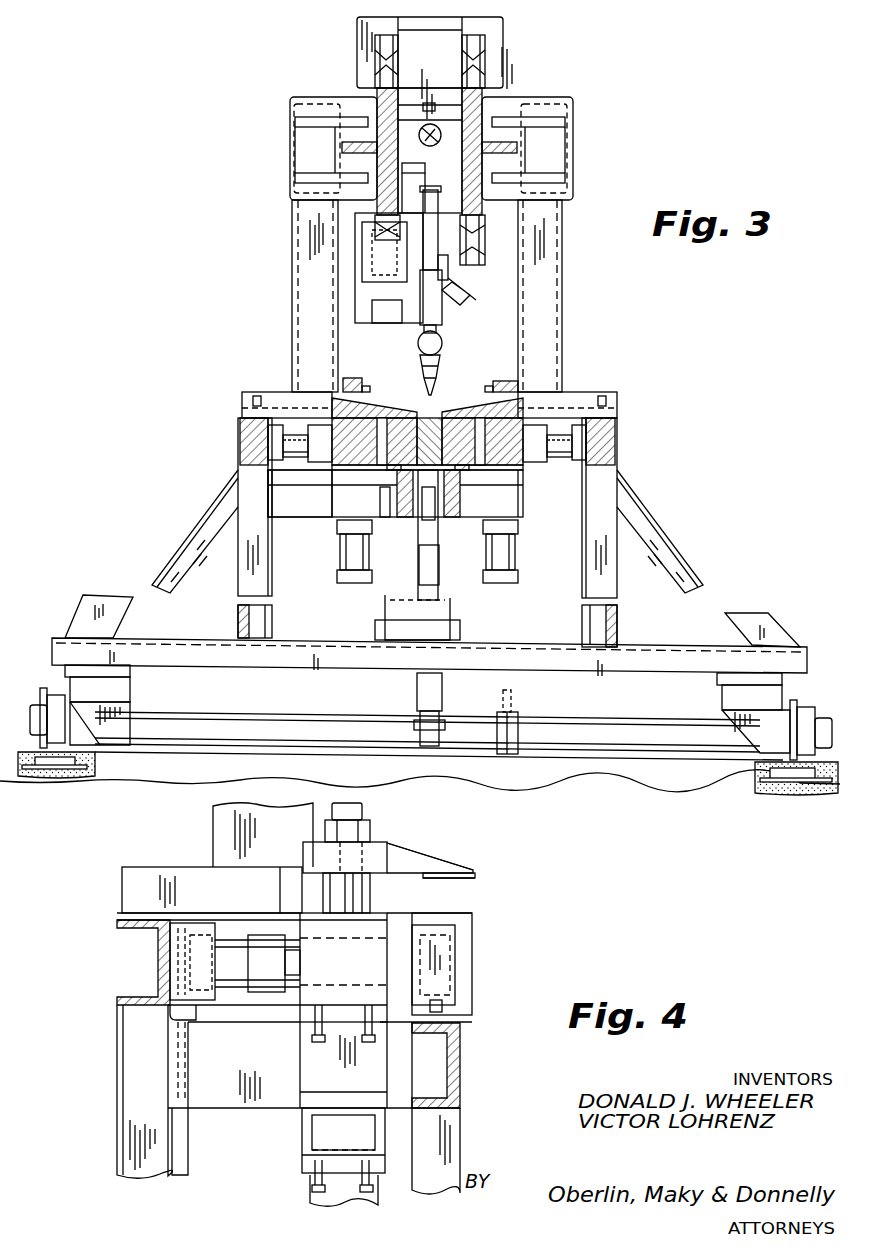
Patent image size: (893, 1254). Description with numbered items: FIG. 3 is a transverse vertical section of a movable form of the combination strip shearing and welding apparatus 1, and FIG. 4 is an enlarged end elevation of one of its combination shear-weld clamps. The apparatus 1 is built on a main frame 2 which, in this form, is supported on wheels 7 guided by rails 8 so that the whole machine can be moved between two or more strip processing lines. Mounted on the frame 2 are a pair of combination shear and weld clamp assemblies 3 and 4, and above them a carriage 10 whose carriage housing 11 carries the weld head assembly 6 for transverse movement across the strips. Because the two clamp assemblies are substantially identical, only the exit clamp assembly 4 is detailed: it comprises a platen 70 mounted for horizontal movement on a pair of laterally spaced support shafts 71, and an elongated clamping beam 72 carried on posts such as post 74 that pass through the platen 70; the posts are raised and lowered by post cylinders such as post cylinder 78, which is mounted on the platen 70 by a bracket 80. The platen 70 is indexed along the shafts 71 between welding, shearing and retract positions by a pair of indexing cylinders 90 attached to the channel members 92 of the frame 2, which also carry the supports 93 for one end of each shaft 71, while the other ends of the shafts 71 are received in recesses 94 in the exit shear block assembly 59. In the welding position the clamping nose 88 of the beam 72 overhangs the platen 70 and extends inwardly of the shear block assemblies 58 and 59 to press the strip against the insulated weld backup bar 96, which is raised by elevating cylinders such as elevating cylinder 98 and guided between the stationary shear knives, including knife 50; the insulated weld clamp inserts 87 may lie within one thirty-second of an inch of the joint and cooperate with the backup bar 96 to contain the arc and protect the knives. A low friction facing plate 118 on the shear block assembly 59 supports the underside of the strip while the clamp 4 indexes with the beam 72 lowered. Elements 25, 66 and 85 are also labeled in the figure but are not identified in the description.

In FIG. 3, the strip joining apparatus 1 is at (240, 393).
In FIG. 3, the main frame 2 is at (52, 645).
In FIG. 3, the combination shear and weld clamp assembly 3 is at (520, 390).
In FIG. 3, the combination shear and weld clamp assembly 4 is at (347, 384).
In FIG. 4, the combination shear and weld clamp assembly 4 is at (422, 852).
In FIG. 3, the weld head assembly 6 is at (418, 355).
In FIG. 3, the wheels 7 is at (800, 712).
In FIG. 3, the rails 8 is at (808, 770).
In FIG. 3, the carriage 10 is at (354, 75).
In FIG. 3, the carriage housing 11 is at (503, 45).
In FIG. 3, the guide shaft 25 is at (482, 100).
In FIG. 4, the stationary shear knife 50 is at (475, 955).
In FIG. 3, the shear block assembly 58 is at (472, 484).
In FIG. 3, the exit shear block assembly 59 is at (383, 495).
In FIG. 4, the exit shear block assembly 59 is at (473, 1022).
In FIG. 3, the welding tip ball 66 is at (440, 345).
In FIG. 3, the platen 70 is at (330, 415).
In FIG. 4, the platen 70 is at (300, 928).
In FIG. 4, the support shafts 71 is at (298, 988).
In FIG. 4, the clamping beam 72 is at (392, 862).
In FIG. 4, the post 74 is at (370, 893).
In FIG. 3, the post cylinder 78 is at (342, 560).
In FIG. 4, the post cylinder 78 is at (312, 1193).
In FIG. 4, the bracket 80 is at (304, 1124).
In FIG. 4, the wedge plate 85 is at (462, 878).
In FIG. 4, the weld clamp inserts 87 is at (437, 880).
In FIG. 3, the clamping nose 88 is at (410, 406).
In FIG. 3, the indexing cylinders 90 is at (297, 458).
In FIG. 4, the indexing cylinders 90 is at (262, 988).
In FIG. 3, the channel members 92 is at (238, 433).
In FIG. 4, the channel members 92 is at (117, 926).
In FIG. 4, the supports 93 is at (200, 1012).
In FIG. 4, the recesses 94 is at (448, 1000).
In FIG. 3, the weld backup bar 96 is at (455, 416).
In FIG. 3, the elevating cylinder 98 is at (436, 583).
In FIG. 3, the low friction facing plate 118 is at (388, 472).